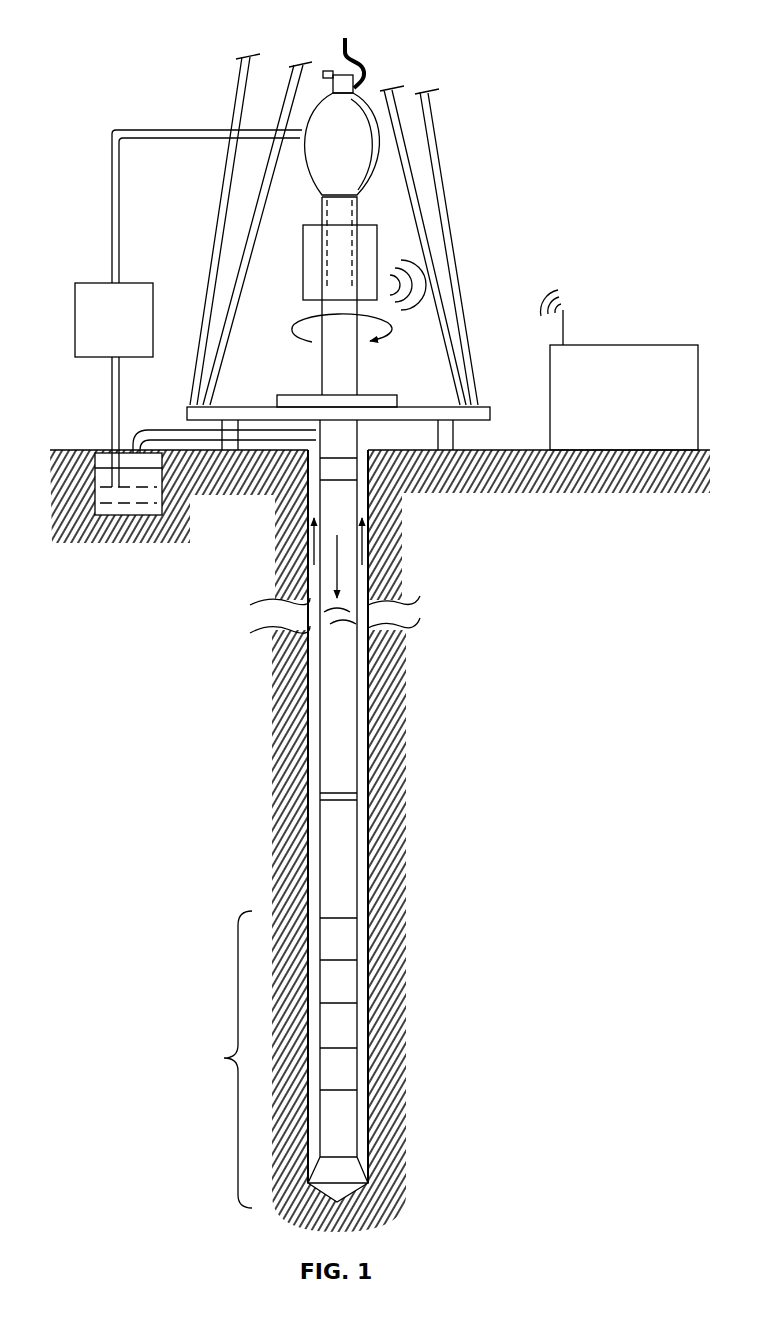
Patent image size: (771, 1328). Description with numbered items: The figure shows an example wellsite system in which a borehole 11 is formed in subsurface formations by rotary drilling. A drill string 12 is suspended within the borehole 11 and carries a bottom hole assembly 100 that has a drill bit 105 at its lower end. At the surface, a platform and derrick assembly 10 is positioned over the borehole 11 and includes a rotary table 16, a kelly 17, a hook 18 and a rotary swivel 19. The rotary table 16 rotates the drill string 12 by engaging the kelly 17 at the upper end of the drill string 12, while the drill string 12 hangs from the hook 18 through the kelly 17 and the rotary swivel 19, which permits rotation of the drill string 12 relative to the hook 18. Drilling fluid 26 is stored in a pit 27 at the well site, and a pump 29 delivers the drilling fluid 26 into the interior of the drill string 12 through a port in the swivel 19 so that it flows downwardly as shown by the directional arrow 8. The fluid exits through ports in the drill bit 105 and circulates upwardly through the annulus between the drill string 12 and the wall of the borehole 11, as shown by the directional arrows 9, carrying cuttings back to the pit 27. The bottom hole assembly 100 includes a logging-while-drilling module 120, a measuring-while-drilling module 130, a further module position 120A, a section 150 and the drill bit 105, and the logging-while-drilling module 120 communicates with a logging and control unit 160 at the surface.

The platform and derrick assembly 10 is at (464, 118).
The hook 18 is at (339, 44).
The rotary swivel 19 is at (318, 198).
The kelly 17 is at (324, 366).
The rotary table 16 is at (365, 394).
The drill string 12 is at (330, 444).
The borehole 11 is at (366, 444).
The directional arrows 9 is at (306, 548).
The directional arrow 8 is at (330, 572).
The pump 29 is at (88, 356).
The pit 27 is at (100, 441).
The drilling fluid 26 is at (115, 520).
The logging and control unit 160 is at (658, 345).
The bottom hole assembly 100 is at (220, 1057).
The logging-while-drilling module 120 is at (345, 992).
The measuring-while-drilling module 130 is at (345, 1032).
The LWD/MWD module 120A is at (345, 1077).
The drill collar / sensor sub 150 is at (345, 1130).
The drill bit 105 is at (345, 1174).